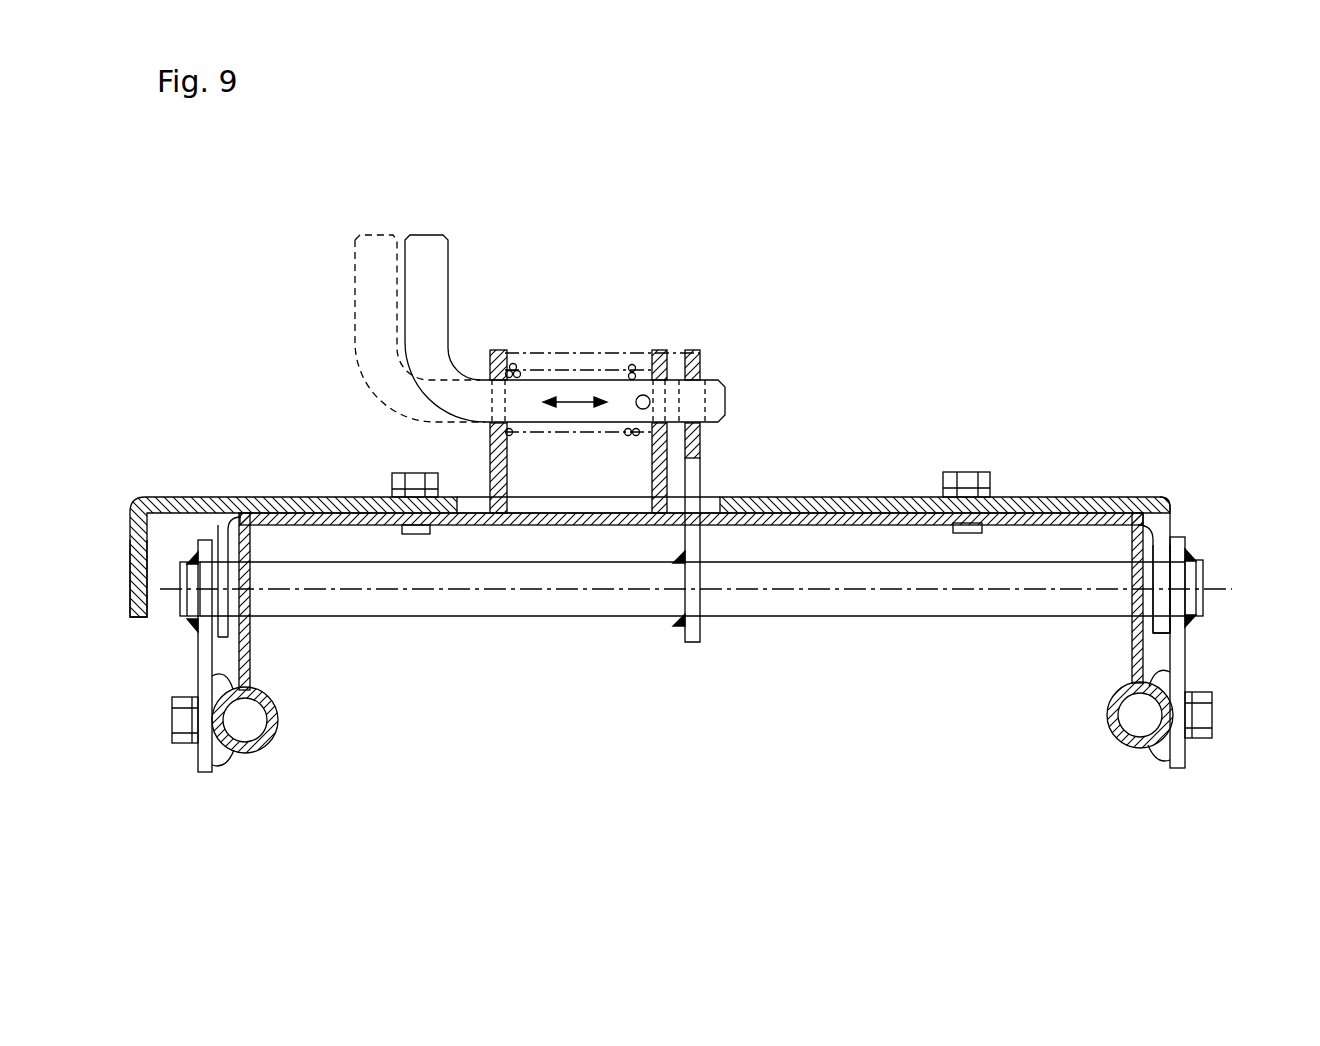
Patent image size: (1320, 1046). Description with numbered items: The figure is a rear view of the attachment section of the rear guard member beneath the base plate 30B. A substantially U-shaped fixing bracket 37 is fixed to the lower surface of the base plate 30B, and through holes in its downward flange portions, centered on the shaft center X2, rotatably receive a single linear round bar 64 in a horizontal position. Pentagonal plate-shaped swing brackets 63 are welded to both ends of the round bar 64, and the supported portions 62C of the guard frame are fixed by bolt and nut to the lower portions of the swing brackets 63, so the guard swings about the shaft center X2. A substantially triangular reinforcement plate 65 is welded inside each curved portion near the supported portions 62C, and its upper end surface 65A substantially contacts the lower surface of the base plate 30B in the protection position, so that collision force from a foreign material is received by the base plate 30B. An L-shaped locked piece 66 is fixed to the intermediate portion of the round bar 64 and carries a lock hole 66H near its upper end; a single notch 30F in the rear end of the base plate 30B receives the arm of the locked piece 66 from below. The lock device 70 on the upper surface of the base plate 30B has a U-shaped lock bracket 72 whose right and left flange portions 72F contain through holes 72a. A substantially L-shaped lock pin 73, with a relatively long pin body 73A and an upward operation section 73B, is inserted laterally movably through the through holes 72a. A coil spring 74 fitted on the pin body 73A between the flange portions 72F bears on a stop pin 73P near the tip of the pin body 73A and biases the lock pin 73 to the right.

The base plate 30B is at (1028, 497).
The notch 30F is at (703, 524).
The fixing bracket 37 is at (226, 603).
The supported portion 62C is at (279, 716).
The swing bracket 63 is at (197, 667).
The round bar 64 is at (568, 620).
The reinforcement plate 65 is at (252, 540).
The upper end surface 65A is at (247, 516).
The locked piece 66 is at (702, 444).
The lock hole 66H is at (700, 408).
The lock device 70 is at (840, 345).
The lock bracket 72 is at (486, 455).
The flange portion 72F is at (494, 349).
The through hole 72a is at (490, 408).
The lock pin 73 is at (398, 280).
The pin body 73A is at (560, 383).
The operation section 73B is at (410, 338).
The stop pin 73P is at (641, 395).
The coil spring 74 is at (632, 437).
The shaft center X2 is at (716, 586).